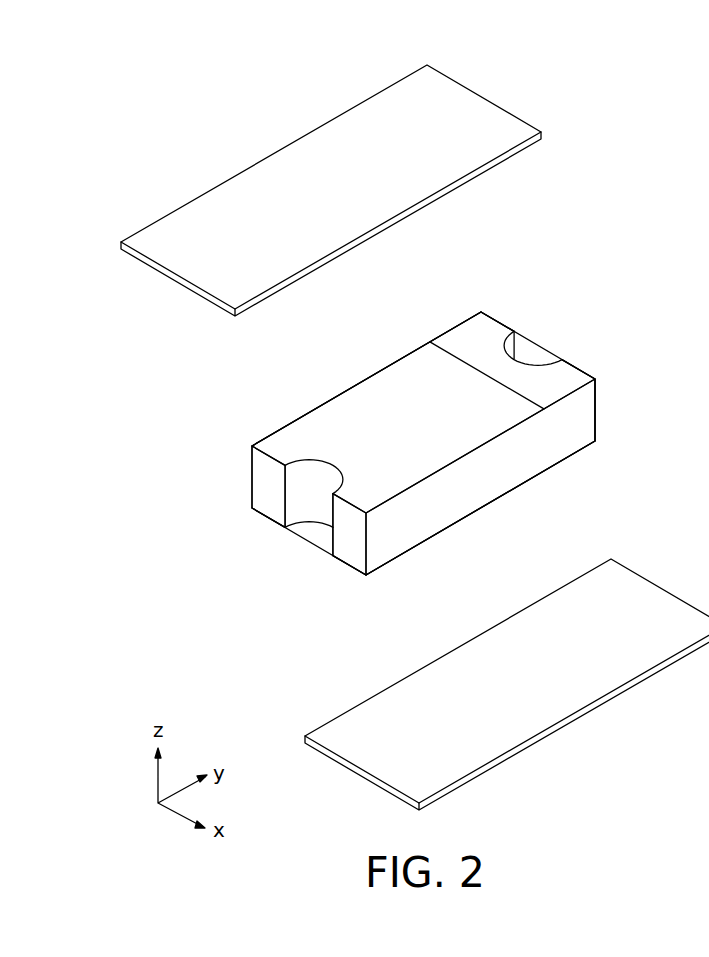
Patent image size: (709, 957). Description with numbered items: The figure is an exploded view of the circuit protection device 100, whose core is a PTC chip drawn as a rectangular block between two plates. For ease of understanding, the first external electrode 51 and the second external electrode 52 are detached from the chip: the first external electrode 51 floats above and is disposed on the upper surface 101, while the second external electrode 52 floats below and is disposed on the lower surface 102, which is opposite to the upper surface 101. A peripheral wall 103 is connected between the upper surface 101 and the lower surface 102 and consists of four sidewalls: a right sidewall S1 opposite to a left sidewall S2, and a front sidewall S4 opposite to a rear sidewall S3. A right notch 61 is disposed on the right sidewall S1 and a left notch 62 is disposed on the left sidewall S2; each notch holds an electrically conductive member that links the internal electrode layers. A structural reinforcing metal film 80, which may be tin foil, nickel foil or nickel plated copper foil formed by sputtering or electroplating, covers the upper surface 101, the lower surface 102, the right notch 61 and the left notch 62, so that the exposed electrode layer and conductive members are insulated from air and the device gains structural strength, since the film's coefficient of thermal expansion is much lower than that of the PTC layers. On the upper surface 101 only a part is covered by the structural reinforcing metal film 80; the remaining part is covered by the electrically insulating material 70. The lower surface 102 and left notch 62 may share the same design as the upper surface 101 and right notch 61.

The circuit protection device 100 is at (117, 64).
The first external electrode 51 is at (328, 135).
The second external electrode 52 is at (653, 600).
The upper surface 101 is at (403, 373).
The lower surface 102 is at (435, 535).
The peripheral wall 103 is at (158, 501).
The right sidewall S1 is at (258, 481).
The left sidewall S2 is at (588, 364).
The rear sidewall S3 is at (487, 501).
The front sidewall S4 is at (348, 382).
The right notch 61 is at (312, 537).
The left notch 62 is at (529, 345).
The electrically insulating material 70 is at (473, 332).
The structural reinforcing metal film 80 is at (285, 438).